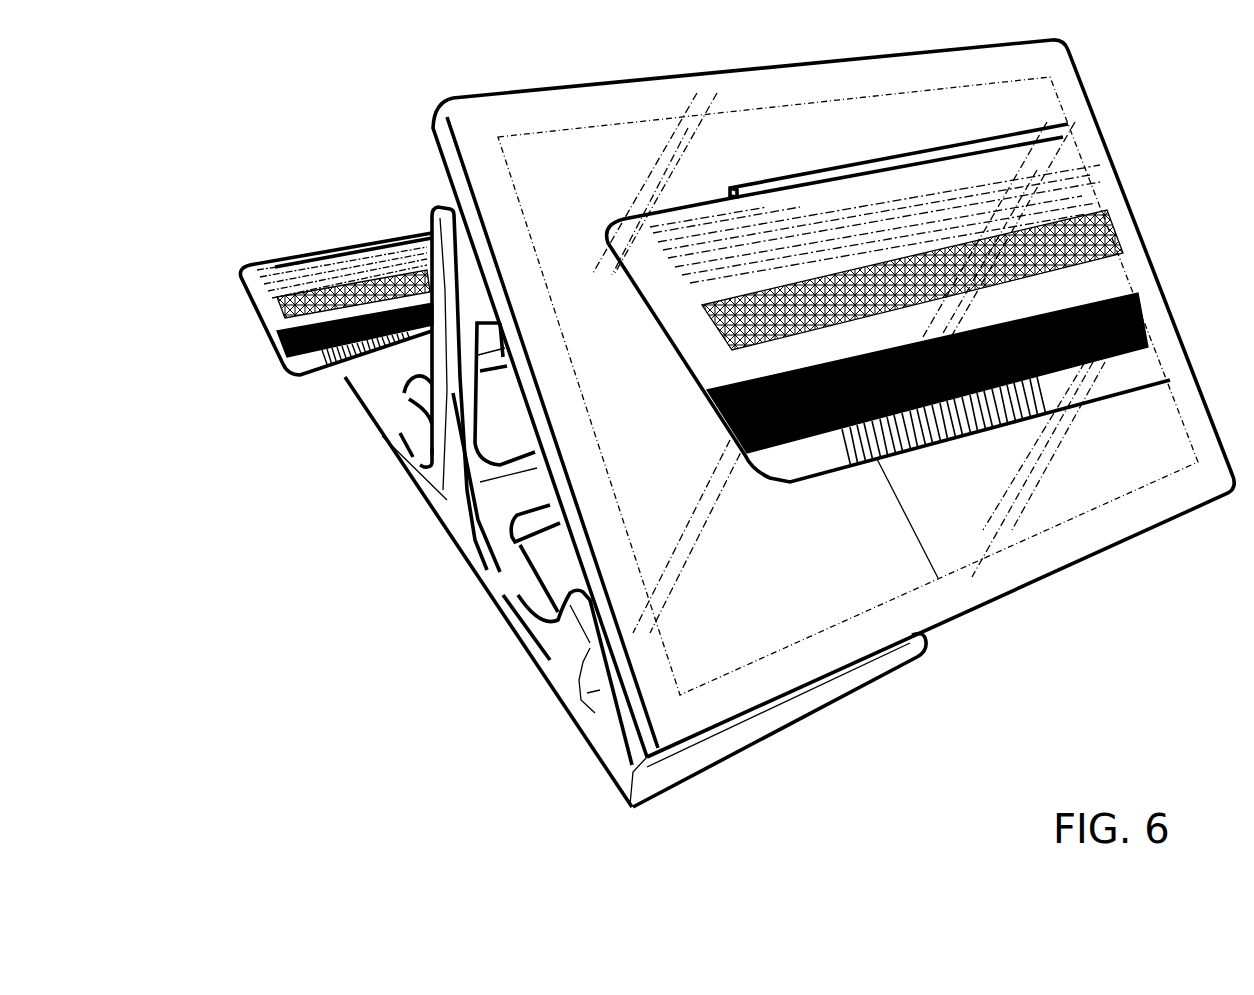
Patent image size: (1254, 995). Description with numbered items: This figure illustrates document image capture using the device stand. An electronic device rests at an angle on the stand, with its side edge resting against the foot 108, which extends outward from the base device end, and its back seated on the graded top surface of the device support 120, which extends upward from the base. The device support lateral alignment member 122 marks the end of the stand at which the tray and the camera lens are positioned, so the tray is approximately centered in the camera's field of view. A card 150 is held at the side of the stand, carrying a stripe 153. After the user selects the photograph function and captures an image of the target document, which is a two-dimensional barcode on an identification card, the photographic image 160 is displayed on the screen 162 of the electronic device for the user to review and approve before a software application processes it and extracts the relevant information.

The foot 108 is at (893, 668).
The device support 120 is at (433, 473).
The device support lateral alignment member 122 is at (404, 390).
The card 150 is at (307, 302).
The magnetic stripe 153 is at (285, 350).
The displayed card image 160 is at (1160, 255).
The display screen 162 is at (1087, 463).